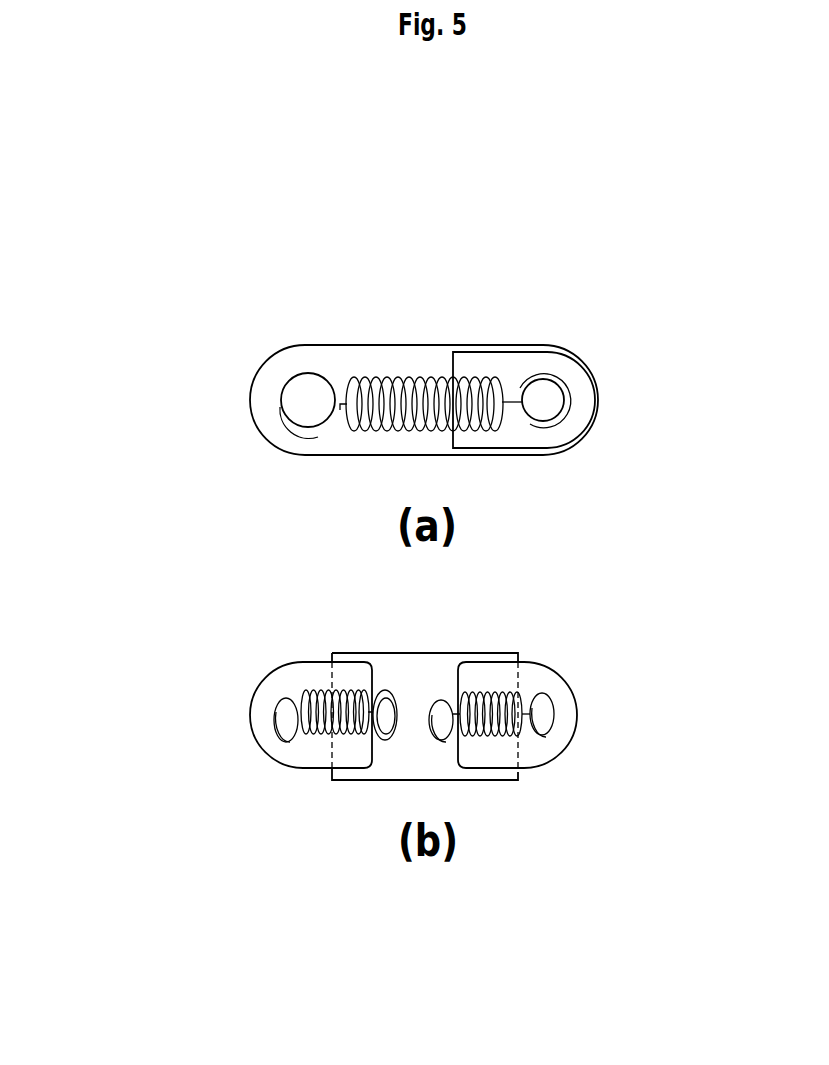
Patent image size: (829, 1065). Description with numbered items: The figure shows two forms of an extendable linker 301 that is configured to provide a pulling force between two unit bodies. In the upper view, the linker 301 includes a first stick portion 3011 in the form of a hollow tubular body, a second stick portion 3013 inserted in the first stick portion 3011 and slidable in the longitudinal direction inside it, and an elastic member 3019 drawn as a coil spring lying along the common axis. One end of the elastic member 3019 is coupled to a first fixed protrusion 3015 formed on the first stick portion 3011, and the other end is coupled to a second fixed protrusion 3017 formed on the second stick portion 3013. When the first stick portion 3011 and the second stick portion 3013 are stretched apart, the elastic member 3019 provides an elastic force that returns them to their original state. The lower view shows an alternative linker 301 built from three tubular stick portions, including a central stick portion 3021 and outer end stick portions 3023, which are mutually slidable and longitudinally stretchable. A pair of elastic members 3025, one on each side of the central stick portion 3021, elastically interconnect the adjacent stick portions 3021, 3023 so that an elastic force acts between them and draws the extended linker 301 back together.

The linker 301 is at (466, 298).
The first stick portion 3011 is at (354, 347).
The second stick portion 3013 is at (568, 390).
The first fixed protrusion 3015 is at (293, 387).
The second fixed protrusion 3017 is at (563, 405).
The elastic member 3019 is at (378, 432).
The stick portion 3021 is at (488, 782).
The stick portion 3023 is at (262, 683).
The elastic members 3025 is at (322, 737).